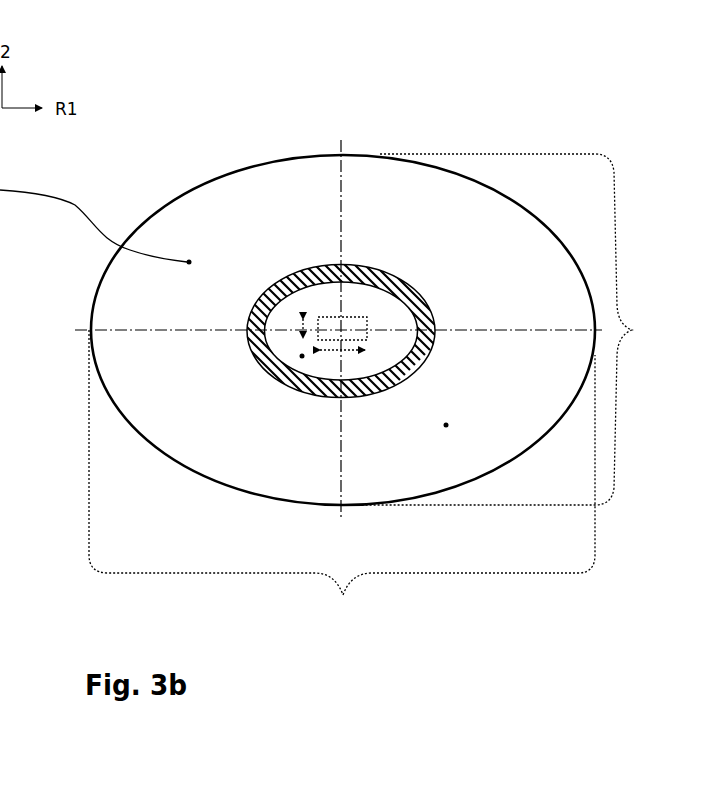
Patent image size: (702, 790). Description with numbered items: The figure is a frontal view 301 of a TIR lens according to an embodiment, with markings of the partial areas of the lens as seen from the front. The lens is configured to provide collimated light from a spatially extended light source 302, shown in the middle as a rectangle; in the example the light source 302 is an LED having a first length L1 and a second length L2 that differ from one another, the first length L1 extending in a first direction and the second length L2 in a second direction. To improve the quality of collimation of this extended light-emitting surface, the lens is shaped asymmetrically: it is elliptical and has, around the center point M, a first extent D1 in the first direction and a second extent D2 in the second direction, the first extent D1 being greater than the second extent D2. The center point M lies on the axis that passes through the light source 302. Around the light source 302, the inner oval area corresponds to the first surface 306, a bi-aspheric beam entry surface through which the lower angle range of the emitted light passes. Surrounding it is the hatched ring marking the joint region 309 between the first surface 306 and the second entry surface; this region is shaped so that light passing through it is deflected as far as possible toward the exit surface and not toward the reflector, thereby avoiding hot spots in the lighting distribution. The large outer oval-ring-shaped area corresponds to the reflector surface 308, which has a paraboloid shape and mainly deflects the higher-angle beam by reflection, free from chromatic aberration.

The frontal view of the TIR lens 301 is at (490, 171).
The light source 302 is at (352, 315).
The first surface 306 is at (300, 362).
The reflector surface 308 is at (447, 430).
The joint region 309 is at (380, 268).
The center point M is at (340, 316).
The first length L1 is at (342, 363).
The second length L2 is at (289, 329).
The first extent D1 is at (342, 479).
The second extent D2 is at (508, 329).